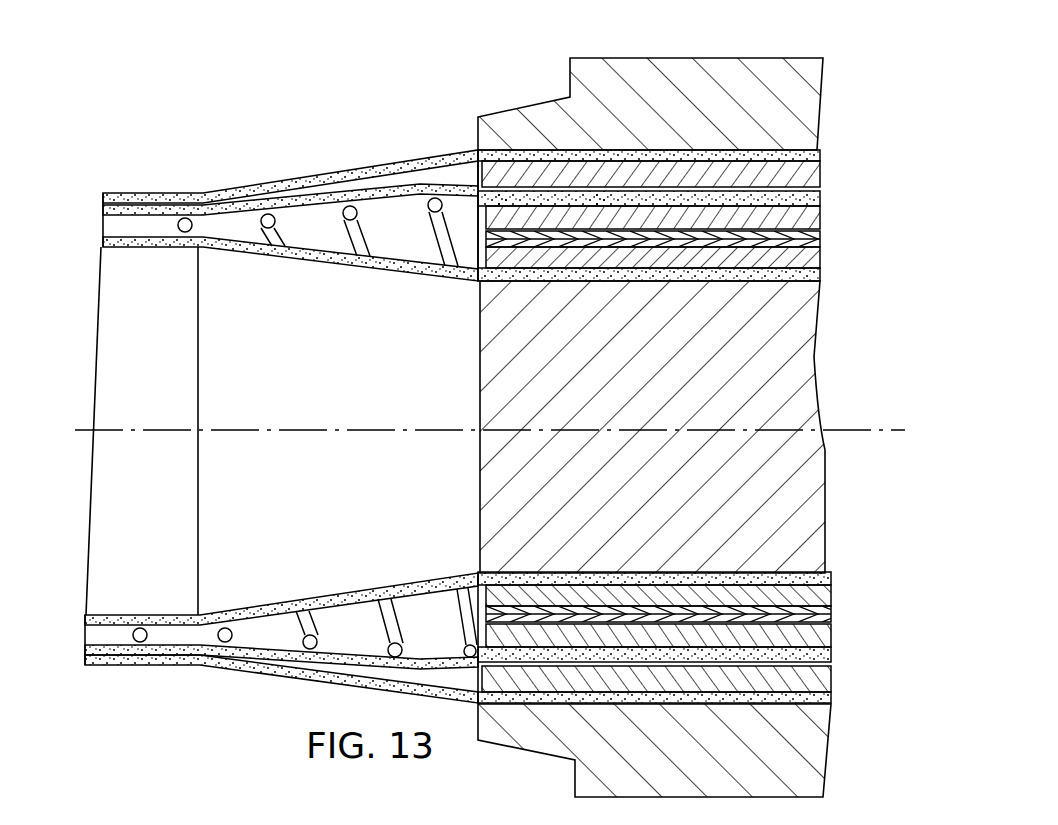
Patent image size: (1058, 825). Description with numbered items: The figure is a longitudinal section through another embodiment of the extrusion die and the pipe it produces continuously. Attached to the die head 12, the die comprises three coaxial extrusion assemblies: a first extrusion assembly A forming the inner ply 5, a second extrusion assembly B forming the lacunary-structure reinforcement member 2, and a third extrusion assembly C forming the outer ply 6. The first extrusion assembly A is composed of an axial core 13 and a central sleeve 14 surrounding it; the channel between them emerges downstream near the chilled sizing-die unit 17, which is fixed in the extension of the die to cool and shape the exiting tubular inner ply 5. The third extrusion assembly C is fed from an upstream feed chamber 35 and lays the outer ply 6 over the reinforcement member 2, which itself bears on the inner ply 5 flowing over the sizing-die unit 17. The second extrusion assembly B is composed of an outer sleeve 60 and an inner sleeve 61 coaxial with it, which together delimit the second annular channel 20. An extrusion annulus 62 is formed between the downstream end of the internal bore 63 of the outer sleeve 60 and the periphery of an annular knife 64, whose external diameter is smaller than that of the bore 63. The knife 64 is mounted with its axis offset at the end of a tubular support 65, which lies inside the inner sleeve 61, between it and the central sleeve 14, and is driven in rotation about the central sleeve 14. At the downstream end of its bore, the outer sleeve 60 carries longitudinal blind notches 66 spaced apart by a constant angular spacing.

The lacunary-structure reinforcement member 2 is at (100, 223).
The inner ply 5 is at (170, 248).
The outer ply 6 is at (172, 193).
The die head 12 is at (800, 107).
The axial core 13 is at (770, 358).
The central sleeve 14 is at (822, 266).
The chilled sizing-die unit 17 is at (158, 560).
The second annular channel 20 is at (816, 196).
The upstream feed chamber 35 is at (814, 157).
The outer sleeve 60 is at (800, 176).
The inner sleeve 61 is at (816, 219).
The extrusion annulus 62 is at (477, 192).
The internal bore 63 is at (602, 200).
The annular knife 64 is at (476, 186).
The tubular support 65 is at (816, 243).
The longitudinal blind notches 66 is at (501, 203).
The first extrusion assembly A is at (466, 288).
The second extrusion assembly B is at (466, 205).
The third extrusion assembly C is at (465, 147).